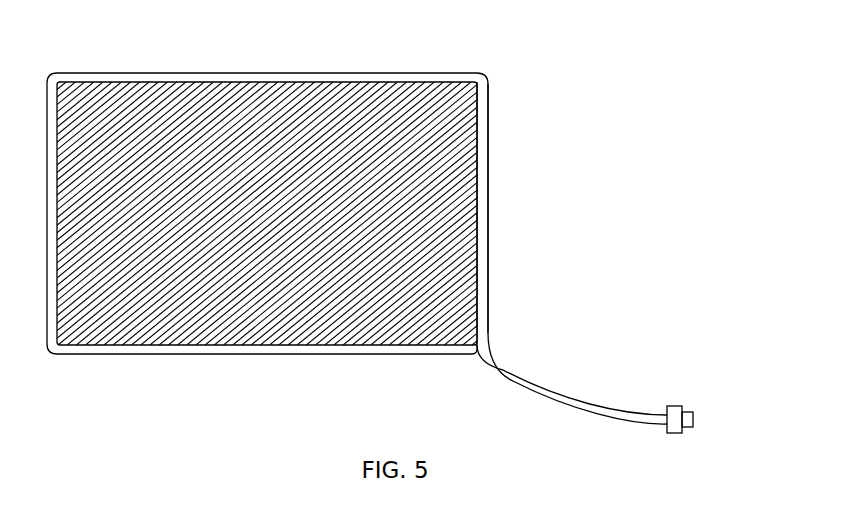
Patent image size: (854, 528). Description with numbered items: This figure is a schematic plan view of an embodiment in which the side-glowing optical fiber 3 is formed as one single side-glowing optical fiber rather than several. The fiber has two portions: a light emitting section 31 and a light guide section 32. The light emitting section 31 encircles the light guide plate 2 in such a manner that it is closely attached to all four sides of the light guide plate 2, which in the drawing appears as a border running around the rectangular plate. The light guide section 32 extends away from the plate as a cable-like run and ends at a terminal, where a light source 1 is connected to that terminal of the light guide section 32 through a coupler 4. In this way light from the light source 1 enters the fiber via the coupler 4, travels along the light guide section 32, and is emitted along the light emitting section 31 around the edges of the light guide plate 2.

The light source 1 is at (687, 422).
The light guide plate 2 is at (437, 143).
The side-glowing optical fiber 3 is at (572, 253).
The light emitting section 31 is at (482, 292).
The light guide section 32 is at (515, 378).
The coupler 4 is at (673, 412).